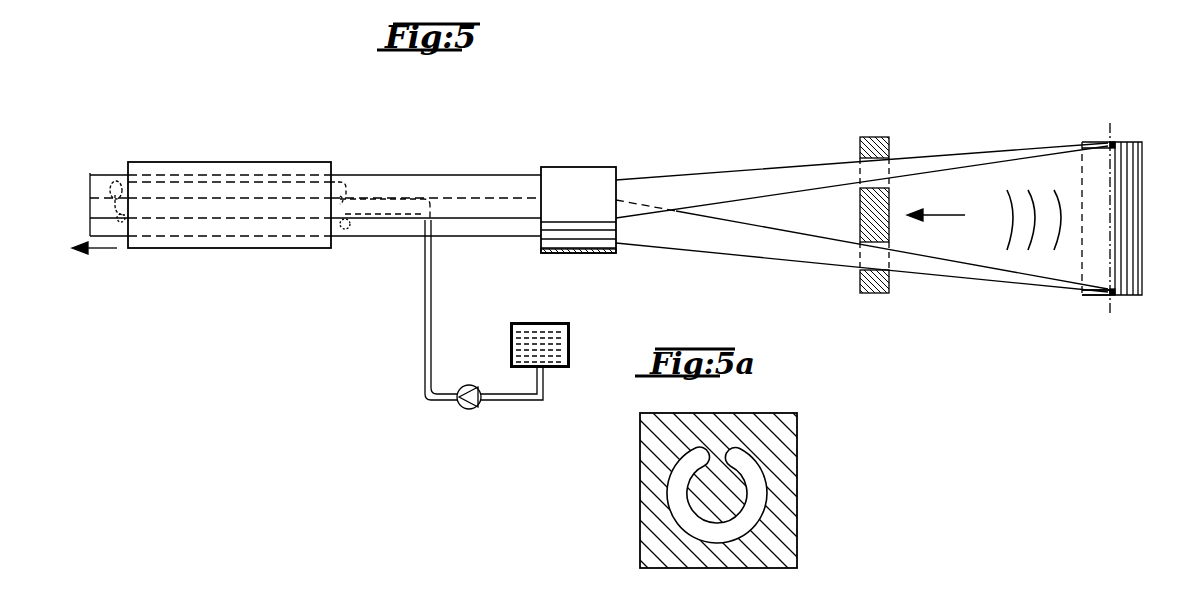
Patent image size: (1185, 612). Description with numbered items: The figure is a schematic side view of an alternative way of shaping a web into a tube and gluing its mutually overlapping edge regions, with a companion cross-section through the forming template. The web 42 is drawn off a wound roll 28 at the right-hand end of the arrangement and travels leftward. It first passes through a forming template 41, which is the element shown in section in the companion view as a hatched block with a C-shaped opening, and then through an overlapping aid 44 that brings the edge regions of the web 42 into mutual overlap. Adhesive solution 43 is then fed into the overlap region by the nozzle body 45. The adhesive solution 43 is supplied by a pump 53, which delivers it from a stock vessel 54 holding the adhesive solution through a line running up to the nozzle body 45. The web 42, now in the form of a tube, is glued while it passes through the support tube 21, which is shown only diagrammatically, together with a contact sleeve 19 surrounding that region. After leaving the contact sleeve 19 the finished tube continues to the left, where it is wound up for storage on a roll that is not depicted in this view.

In FIG. 5, the contact sleeve 19 is at (271, 170).
In FIG. 5, the support tube 21 is at (349, 188).
In FIG. 5, the nozzle body 45 is at (418, 194).
In FIG. 5, the overlapping aid 44 is at (572, 183).
In FIG. 5, the web 42 is at (452, 232).
In FIG. 5, the forming template 41 is at (870, 293).
In FIG. 5a, the forming template 41 is at (778, 482).
In FIG. 5, the wound roll 28 is at (1097, 293).
In FIG. 5, the stock vessel 54 is at (510, 325).
In FIG. 5, the adhesive solution 43 is at (510, 352).
In FIG. 5, the pump 53 is at (464, 408).